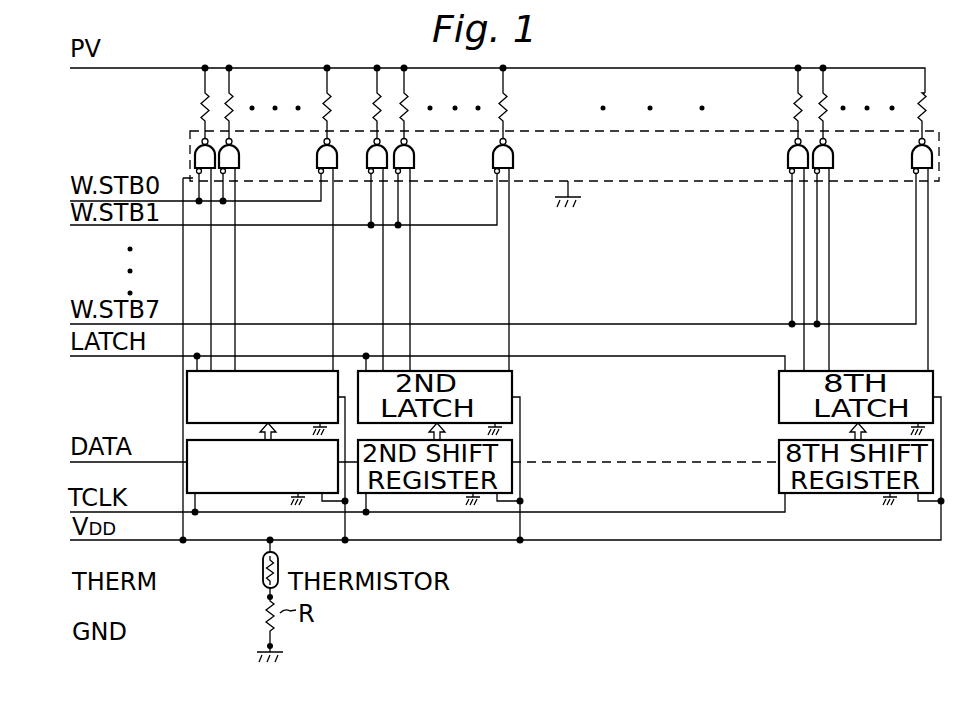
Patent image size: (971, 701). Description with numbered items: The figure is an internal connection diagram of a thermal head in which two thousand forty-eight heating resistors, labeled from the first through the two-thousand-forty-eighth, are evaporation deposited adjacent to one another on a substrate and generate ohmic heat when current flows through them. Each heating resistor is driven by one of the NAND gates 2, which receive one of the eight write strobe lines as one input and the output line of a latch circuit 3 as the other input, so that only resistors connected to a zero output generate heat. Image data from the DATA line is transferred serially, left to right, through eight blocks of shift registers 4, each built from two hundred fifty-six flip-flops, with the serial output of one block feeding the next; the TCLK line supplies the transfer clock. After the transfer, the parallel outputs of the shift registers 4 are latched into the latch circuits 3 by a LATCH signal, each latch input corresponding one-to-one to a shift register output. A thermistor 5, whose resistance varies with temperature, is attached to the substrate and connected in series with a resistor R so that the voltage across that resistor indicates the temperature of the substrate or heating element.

The NAND gates 2 is at (190, 156).
The latch circuits 3 is at (187, 405).
The shift registers 4 is at (187, 486).
The thermistor 5 is at (262, 567).